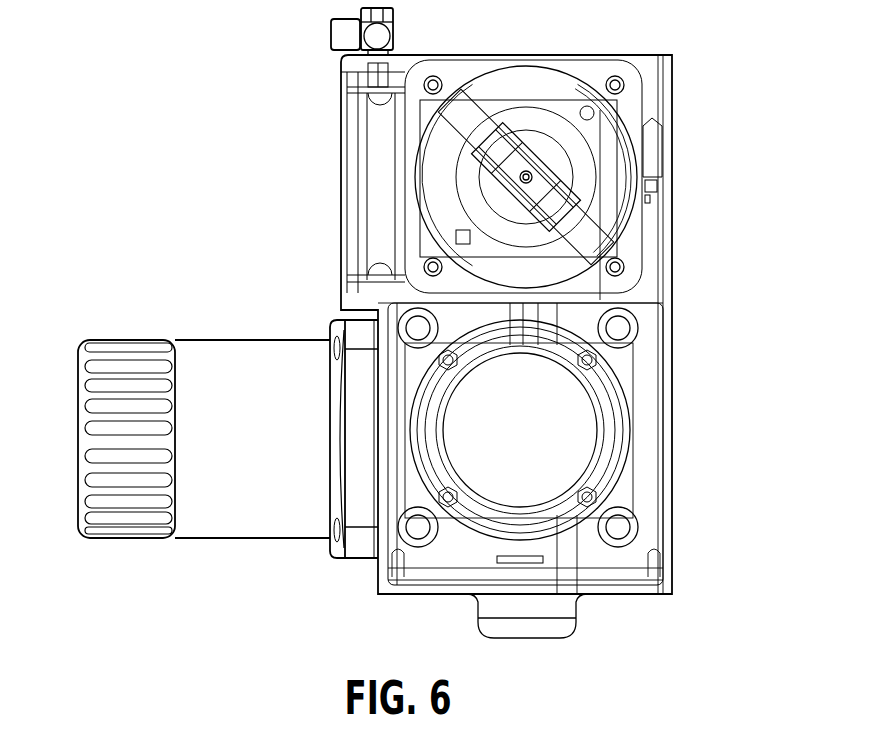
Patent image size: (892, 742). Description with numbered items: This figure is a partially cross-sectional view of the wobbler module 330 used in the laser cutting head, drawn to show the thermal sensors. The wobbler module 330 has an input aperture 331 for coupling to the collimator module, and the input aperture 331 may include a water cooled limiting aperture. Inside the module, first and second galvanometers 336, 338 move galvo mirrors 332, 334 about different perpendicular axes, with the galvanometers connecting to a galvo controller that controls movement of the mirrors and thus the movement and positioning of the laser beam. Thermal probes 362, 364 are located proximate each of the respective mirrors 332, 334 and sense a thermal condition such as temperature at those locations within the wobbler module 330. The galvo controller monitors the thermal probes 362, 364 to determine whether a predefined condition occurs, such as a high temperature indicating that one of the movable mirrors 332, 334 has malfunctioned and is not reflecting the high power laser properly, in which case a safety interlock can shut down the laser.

The wobbler module 330 is at (153, 117).
The input aperture 331 is at (348, 178).
The galvo mirror 332 is at (580, 233).
The galvo mirror 334 is at (568, 427).
The first galvanometer 336 is at (704, 74).
The second galvanometer 338 is at (158, 563).
The thermal probe 362 is at (657, 150).
The thermal probe 364 is at (505, 560).